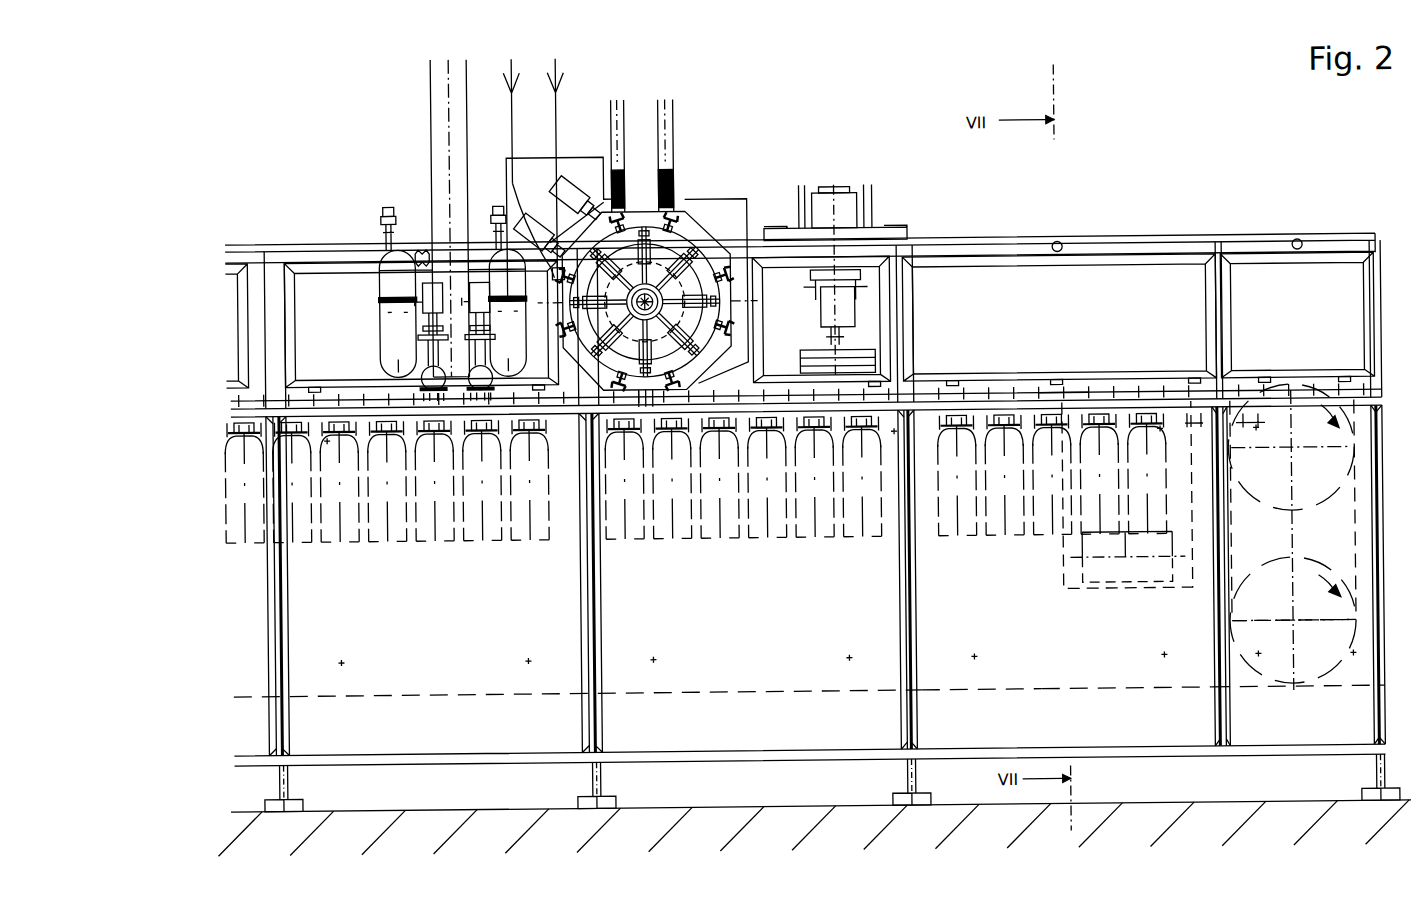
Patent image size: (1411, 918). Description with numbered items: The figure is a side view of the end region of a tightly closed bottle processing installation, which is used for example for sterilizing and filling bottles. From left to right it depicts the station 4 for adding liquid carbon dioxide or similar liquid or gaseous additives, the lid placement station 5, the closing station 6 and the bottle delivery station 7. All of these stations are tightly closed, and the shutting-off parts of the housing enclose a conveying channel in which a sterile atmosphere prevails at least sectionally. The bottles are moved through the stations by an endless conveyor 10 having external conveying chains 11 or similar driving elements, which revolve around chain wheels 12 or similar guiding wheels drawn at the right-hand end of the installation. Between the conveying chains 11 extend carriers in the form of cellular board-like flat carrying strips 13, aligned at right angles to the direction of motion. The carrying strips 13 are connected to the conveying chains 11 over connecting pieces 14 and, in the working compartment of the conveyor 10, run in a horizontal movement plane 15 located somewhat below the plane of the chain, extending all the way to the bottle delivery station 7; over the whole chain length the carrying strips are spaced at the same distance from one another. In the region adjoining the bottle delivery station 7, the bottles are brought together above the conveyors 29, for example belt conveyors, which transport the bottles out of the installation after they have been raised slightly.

The station for adding liquid carbon dioxide 4 is at (447, 605).
The lid placement station 5 is at (688, 601).
The closing station 6 is at (852, 600).
The bottle delivery station 7 is at (1070, 617).
The endless conveyor 10 is at (1090, 691).
The conveying chains 11 is at (990, 691).
The chain wheels 12 is at (1318, 576).
The carrying strips 13 is at (970, 432).
The connecting pieces 14 is at (1065, 393).
The horizontal movement plane 15 is at (1126, 428).
The conveyors 29 is at (1167, 588).